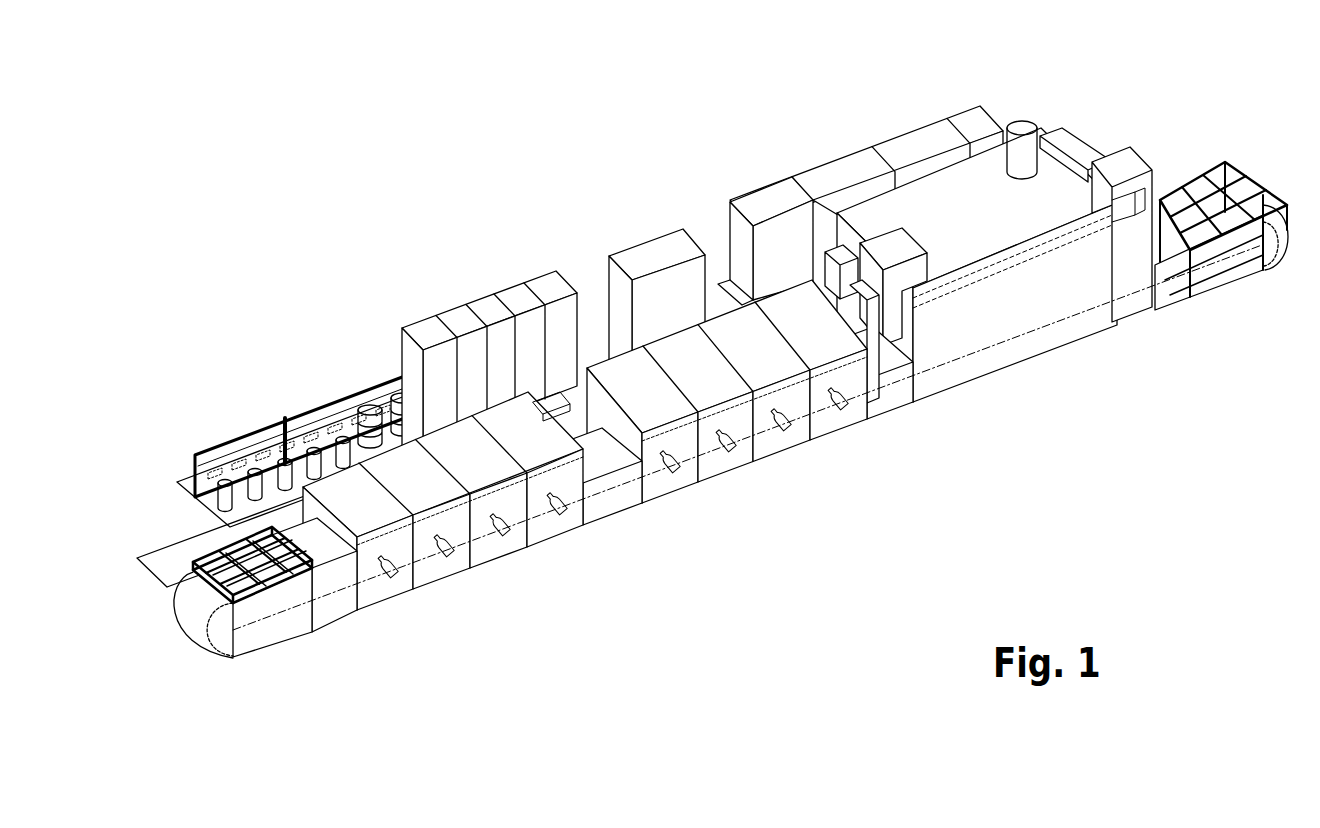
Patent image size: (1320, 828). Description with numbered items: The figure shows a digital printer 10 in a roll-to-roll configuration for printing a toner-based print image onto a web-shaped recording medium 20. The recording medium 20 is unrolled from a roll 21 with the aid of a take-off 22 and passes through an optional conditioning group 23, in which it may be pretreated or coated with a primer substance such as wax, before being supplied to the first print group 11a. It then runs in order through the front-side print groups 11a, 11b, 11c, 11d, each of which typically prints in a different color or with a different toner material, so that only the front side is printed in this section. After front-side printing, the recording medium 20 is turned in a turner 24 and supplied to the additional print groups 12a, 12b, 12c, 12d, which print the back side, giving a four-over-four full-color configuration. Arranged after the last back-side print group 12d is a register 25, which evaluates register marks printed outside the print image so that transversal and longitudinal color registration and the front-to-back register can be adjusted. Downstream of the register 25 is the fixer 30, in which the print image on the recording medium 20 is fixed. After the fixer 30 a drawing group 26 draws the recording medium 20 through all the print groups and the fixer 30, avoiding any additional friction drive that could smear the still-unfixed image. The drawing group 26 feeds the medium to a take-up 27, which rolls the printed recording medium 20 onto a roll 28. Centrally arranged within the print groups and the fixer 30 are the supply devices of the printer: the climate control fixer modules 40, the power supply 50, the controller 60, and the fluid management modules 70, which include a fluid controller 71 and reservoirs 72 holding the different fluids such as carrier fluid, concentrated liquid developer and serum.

The digital printer 10 is at (719, 363).
The first print group 11a is at (382, 613).
The print group 11b is at (441, 592).
The print group 11c is at (500, 570).
The print group 11d is at (553, 548).
The print group 12a is at (678, 490).
The print group 12b is at (732, 470).
The print group 12c is at (787, 448).
The print group 12d is at (836, 428).
The recording medium 20 is at (390, 602).
The roll 21 is at (215, 642).
The take-off 22 is at (285, 642).
The conditioning group 23 is at (333, 630).
The turner 24 is at (610, 500).
The register 25 is at (893, 392).
The drawing group 26 is at (1133, 320).
The take-up 27 is at (1228, 265).
The roll 28 is at (1278, 237).
The fixer 30 is at (1041, 373).
The climate control fixer modules 40 is at (874, 102).
The power supply 50 is at (762, 176).
The controller 60 is at (630, 234).
The fluid management modules 70 is at (377, 359).
The fluid controller 71 is at (467, 291).
The reservoirs 72 is at (313, 403).